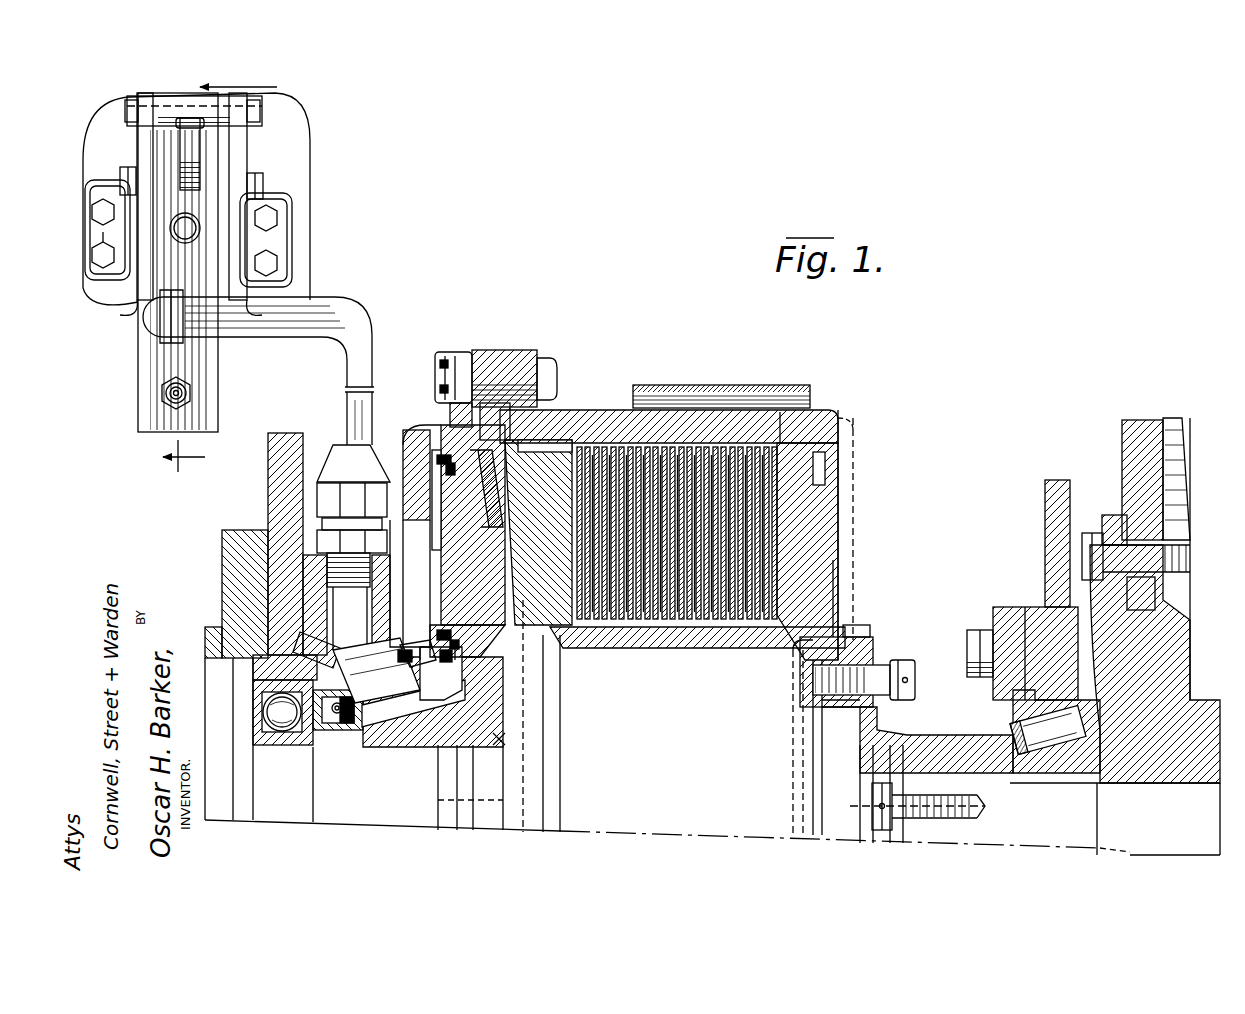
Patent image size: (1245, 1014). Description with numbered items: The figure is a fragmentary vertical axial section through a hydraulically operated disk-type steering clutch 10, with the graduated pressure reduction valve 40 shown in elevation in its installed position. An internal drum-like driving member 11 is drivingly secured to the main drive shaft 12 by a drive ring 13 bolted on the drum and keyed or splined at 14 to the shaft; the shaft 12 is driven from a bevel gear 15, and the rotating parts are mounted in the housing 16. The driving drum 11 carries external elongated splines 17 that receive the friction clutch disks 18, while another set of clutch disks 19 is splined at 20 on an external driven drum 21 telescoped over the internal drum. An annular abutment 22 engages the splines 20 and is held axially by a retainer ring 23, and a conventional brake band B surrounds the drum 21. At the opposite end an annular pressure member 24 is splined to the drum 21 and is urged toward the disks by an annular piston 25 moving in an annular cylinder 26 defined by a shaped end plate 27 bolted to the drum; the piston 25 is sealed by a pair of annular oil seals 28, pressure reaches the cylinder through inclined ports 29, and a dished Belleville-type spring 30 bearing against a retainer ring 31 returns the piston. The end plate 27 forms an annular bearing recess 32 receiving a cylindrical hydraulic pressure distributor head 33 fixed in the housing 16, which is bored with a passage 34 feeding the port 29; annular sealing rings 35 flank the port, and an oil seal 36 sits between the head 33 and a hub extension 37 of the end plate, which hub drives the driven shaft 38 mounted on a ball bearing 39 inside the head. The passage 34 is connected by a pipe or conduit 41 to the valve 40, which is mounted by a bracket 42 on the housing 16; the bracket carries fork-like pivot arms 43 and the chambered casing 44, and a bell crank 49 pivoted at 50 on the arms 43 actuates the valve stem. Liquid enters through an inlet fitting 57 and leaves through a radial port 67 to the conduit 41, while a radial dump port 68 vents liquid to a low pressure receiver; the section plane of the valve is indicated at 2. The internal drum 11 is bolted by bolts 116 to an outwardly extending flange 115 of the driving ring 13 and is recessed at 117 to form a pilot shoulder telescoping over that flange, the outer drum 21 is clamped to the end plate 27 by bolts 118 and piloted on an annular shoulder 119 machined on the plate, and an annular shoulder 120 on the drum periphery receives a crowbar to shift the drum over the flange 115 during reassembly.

The section line 2- 2 is at (222, 290).
The disk-type steering clutch 10 is at (842, 497).
The internal drum-like driving member 11 is at (787, 645).
The main drive shaft 12 is at (1030, 842).
The drive ring 13 is at (905, 738).
The key or spline connection 14 is at (927, 837).
The bevel gear 15 is at (1195, 705).
The housing 16 is at (270, 485).
The external elongated splines 17 is at (830, 615).
The friction clutch disks 18 is at (634, 630).
The clutch disks 19 is at (781, 440).
The splines 20 is at (574, 450).
The external driven drum 21 is at (830, 418).
The annular abutment 22 is at (830, 512).
The retainer ring 23 is at (822, 472).
The annular pressure member 24 is at (545, 455).
The annular piston 25 is at (433, 452).
The annular cylinder 26 is at (437, 500).
The shaped end plate 27 is at (378, 493).
The annular oil seals 28 is at (448, 460).
The inclined passages or ports 29 is at (434, 646).
The Belleville-type spring 30 is at (483, 380).
The retainer ring 31 is at (510, 385).
The annular bearing recess 32 is at (463, 690).
The hydraulic pressure distributor head 33 is at (385, 690).
The passage 34 is at (407, 690).
The annular sealing rings 35 is at (400, 695).
The oil seal 36 is at (305, 745).
The hub extension 37 is at (332, 747).
The driven shaft 38 is at (283, 824).
The ball bearing 39 is at (272, 648).
The pressure reduction valve 40 is at (292, 246).
The pipe or conduit 41 is at (342, 322).
The bracket 42 is at (262, 196).
The fork-like pivot arms 43 is at (140, 160).
The valve casing 44 is at (150, 366).
The bell crank 49 is at (190, 146).
The pivot 50 is at (258, 128).
The inlet fitting 57 is at (174, 395).
The radial port 67 is at (160, 318).
The radial dump port 68 is at (185, 240).
The outwardly extending flange 115 is at (823, 735).
The bolts 116 is at (882, 675).
The circumferential recess 117 is at (873, 665).
The bolts 118 is at (525, 395).
The annular shoulder 119 is at (542, 470).
The annular shoulder 120 is at (862, 638).
The brake band B is at (706, 386).